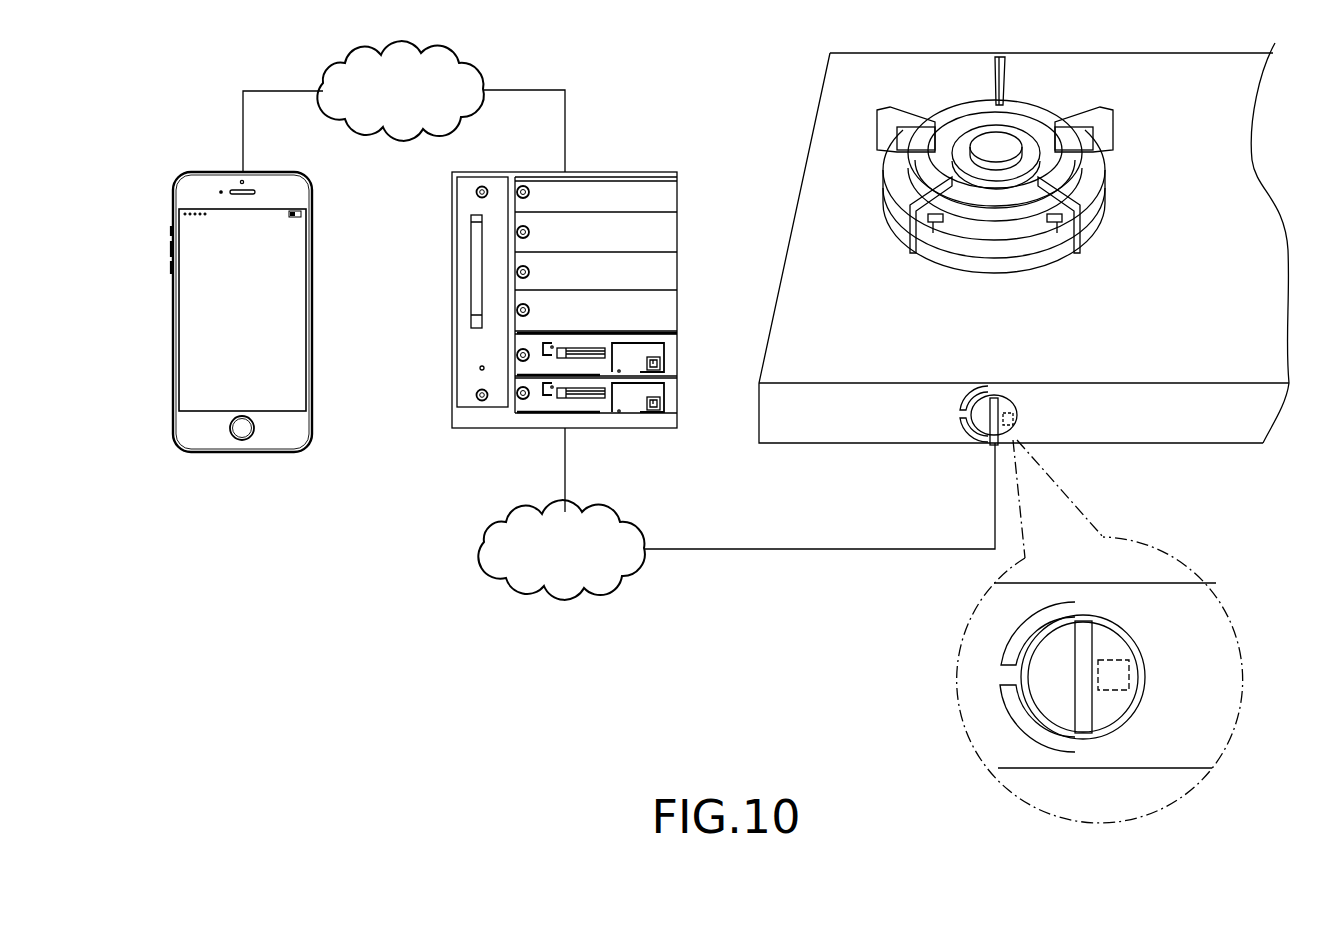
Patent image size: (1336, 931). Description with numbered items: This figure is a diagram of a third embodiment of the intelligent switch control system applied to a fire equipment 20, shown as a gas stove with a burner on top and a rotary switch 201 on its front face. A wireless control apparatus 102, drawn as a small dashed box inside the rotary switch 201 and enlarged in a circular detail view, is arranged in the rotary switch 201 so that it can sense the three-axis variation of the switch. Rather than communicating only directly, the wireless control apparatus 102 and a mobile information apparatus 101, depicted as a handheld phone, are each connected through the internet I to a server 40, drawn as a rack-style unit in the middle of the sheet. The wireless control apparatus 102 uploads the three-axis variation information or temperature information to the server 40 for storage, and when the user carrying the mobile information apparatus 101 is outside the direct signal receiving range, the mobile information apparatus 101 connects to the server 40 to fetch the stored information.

The internet I is at (403, 52).
The mobile information apparatus 101 is at (225, 178).
The server 40 is at (635, 185).
The fire equipment 20 is at (1165, 63).
The rotary switch 201 is at (1048, 648).
The wireless control apparatus 102 is at (1113, 685).